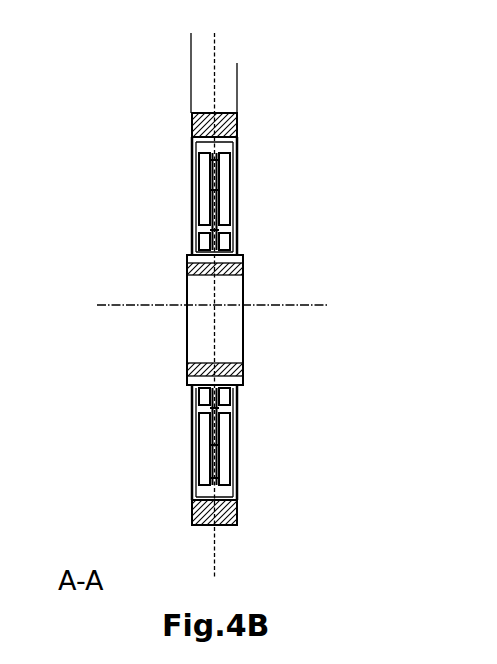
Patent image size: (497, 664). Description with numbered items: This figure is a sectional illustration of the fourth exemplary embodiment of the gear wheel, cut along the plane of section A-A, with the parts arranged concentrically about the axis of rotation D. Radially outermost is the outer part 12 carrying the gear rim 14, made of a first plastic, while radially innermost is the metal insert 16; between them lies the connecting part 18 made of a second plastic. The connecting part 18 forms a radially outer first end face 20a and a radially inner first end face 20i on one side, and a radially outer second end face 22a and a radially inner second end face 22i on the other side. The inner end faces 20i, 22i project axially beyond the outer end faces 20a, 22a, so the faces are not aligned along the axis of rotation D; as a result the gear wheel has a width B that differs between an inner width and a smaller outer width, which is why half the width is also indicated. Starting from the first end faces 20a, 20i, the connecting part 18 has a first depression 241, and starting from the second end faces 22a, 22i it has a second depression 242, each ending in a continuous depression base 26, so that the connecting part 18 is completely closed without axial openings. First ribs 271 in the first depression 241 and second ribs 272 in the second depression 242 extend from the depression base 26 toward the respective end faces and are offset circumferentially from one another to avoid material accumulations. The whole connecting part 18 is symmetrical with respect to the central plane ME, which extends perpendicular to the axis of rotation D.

The outer part 12 is at (299, 112).
The gear rim 14 is at (237, 119).
The insert 16 is at (243, 268).
The connecting part 18 is at (214, 188).
The radially outer first end face 20a is at (192, 127).
The radially inner first end face 20i is at (187, 257).
The radially outer second end face 22a is at (237, 132).
The radially inner second end face 22i is at (243, 258).
The first depression 241 is at (203, 172).
The second depression 242 is at (223, 182).
The depression base 26 is at (208, 193).
The first ribs 271 is at (205, 230).
The second ribs 272 is at (237, 234).
The central plane ME is at (217, 348).
The axis of rotation D is at (130, 305).
The width B is at (415, 79).